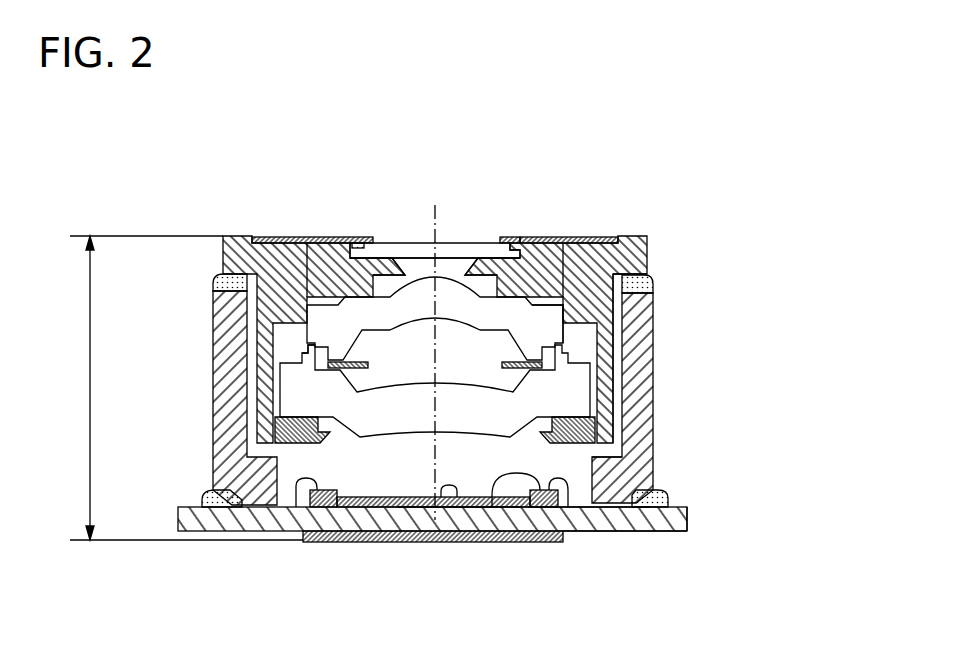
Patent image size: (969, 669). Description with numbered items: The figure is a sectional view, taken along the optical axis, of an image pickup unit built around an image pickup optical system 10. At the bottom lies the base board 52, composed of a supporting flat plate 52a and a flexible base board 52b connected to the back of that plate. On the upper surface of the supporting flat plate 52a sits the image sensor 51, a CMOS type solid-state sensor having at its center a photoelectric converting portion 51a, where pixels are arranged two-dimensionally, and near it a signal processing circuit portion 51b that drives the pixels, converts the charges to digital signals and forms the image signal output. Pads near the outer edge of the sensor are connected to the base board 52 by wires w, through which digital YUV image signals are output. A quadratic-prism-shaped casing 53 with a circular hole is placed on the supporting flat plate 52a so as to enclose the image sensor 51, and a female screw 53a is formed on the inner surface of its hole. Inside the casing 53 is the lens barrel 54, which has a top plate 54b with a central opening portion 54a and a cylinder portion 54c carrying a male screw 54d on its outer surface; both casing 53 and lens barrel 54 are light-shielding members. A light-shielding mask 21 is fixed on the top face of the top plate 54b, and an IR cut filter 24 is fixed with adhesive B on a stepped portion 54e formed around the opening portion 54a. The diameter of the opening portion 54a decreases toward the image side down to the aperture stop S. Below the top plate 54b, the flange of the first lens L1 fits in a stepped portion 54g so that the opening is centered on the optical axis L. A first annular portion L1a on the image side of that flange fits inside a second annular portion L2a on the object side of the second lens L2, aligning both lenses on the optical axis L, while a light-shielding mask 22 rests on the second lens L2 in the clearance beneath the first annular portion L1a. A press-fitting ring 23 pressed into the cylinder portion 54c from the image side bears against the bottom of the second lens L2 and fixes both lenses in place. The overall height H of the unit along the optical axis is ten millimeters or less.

The image pickup optical system 10 is at (608, 162).
The light-shielding mask 21 is at (269, 234).
The light-shielding mask 22 is at (368, 366).
The press-fitting ring 23 is at (308, 444).
The IR cut filter 24 is at (485, 243).
The image sensor 51 is at (398, 588).
The photoelectric converting portion 51a is at (490, 510).
The signal processing circuit portion 51b is at (455, 510).
The base board 52 is at (650, 588).
The supporting flat plate 52a is at (619, 523).
The flexible base board 52b is at (556, 543).
The casing 53 is at (645, 328).
The female screw 53a is at (618, 452).
The lens barrel 54 is at (644, 237).
The opening portion 54a is at (418, 266).
The top plate 54b is at (577, 237).
The cylinder portion 54c is at (605, 384).
The male screw 54d is at (618, 300).
The stepped portion 54e is at (517, 242).
The stepped portion 54g is at (308, 236).
The adhesive B is at (356, 242).
The height H is at (183, 388).
The optical axis L is at (435, 205).
The first lens L1 is at (316, 321).
The first annular portion L1a is at (533, 358).
The second lens L2 is at (292, 392).
The second annular portion L2a is at (308, 349).
The aperture stop S is at (464, 262).
The wires w is at (620, 474).